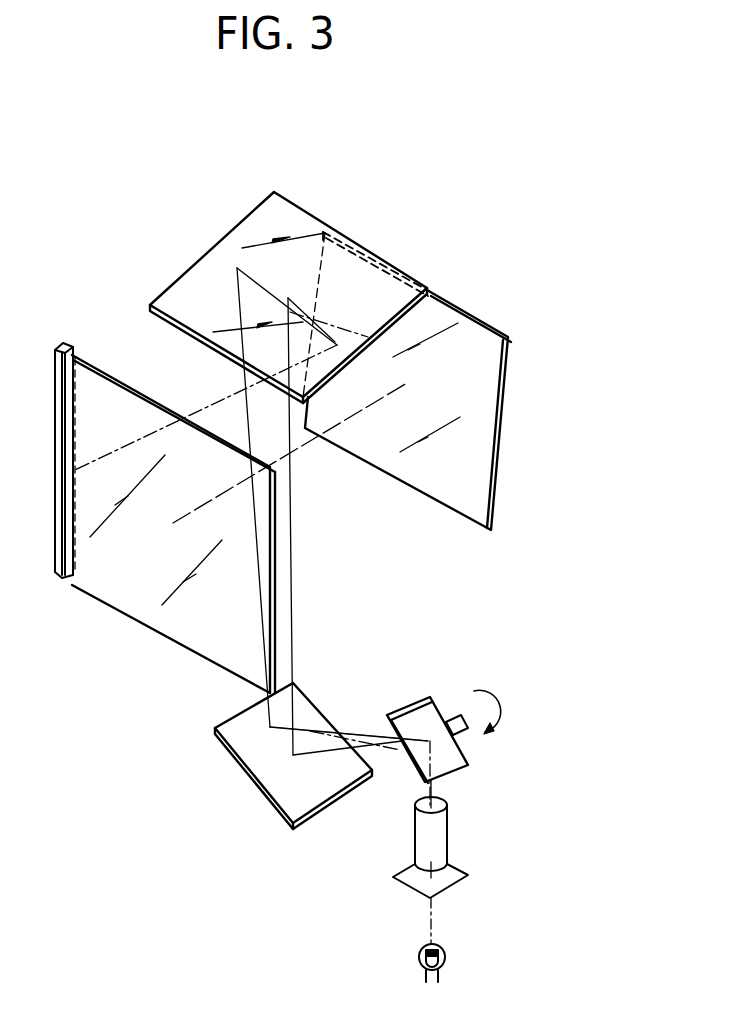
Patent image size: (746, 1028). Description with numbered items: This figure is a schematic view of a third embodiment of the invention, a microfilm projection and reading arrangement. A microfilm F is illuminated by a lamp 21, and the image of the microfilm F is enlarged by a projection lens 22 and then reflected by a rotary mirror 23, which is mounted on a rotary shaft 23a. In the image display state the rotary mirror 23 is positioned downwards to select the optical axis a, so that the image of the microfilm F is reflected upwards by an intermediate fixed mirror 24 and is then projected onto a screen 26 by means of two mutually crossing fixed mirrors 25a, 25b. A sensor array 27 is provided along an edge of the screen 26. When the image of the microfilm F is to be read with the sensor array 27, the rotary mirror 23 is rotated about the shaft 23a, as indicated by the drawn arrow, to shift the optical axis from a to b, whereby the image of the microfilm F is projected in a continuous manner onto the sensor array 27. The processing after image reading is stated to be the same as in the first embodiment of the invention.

The lamp 21 is at (446, 957).
The projection lens 22 is at (447, 835).
The rotary mirror 23 is at (427, 696).
The rotary shaft 23a is at (457, 716).
The intermediate fixed mirror 24 is at (284, 801).
The fixed mirror 25a is at (295, 203).
The fixed mirror 25b is at (500, 377).
The screen 26 is at (137, 620).
The sensor array 27 is at (62, 577).
The microfilm F is at (467, 875).
The optical axis a is at (384, 746).
The optical axis b is at (357, 733).